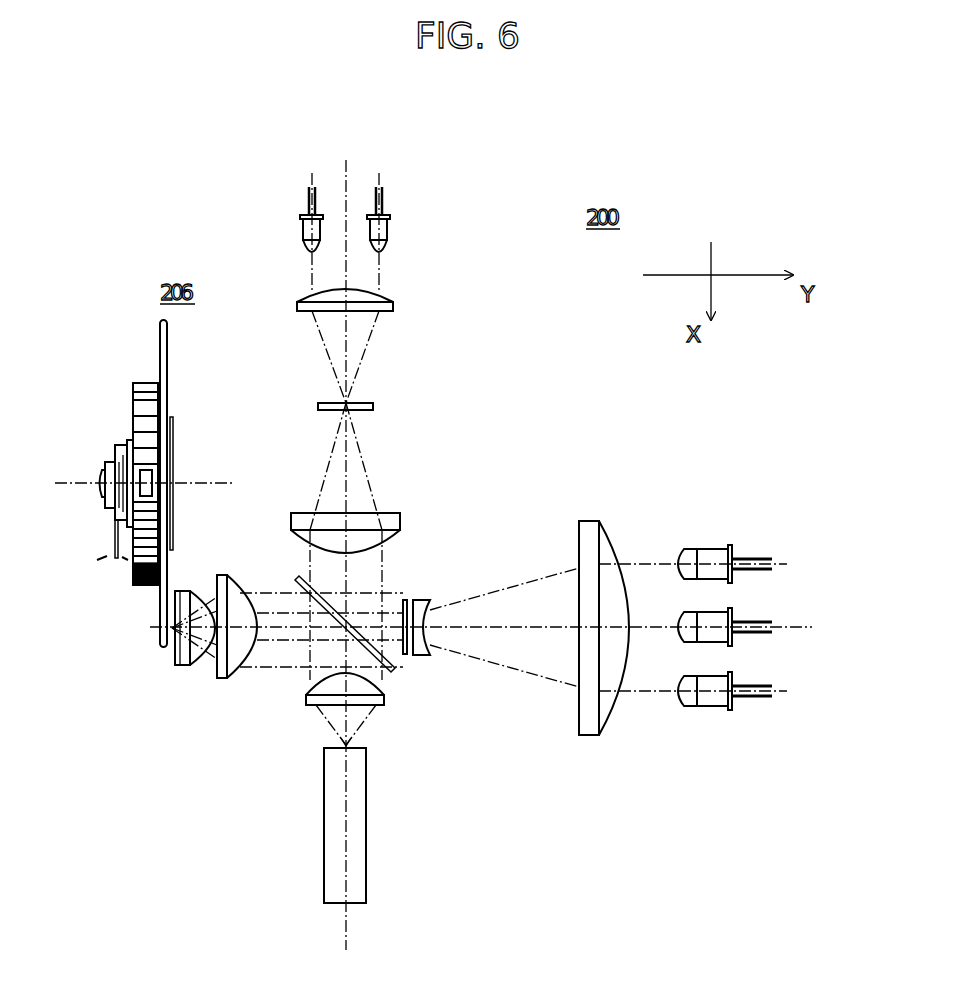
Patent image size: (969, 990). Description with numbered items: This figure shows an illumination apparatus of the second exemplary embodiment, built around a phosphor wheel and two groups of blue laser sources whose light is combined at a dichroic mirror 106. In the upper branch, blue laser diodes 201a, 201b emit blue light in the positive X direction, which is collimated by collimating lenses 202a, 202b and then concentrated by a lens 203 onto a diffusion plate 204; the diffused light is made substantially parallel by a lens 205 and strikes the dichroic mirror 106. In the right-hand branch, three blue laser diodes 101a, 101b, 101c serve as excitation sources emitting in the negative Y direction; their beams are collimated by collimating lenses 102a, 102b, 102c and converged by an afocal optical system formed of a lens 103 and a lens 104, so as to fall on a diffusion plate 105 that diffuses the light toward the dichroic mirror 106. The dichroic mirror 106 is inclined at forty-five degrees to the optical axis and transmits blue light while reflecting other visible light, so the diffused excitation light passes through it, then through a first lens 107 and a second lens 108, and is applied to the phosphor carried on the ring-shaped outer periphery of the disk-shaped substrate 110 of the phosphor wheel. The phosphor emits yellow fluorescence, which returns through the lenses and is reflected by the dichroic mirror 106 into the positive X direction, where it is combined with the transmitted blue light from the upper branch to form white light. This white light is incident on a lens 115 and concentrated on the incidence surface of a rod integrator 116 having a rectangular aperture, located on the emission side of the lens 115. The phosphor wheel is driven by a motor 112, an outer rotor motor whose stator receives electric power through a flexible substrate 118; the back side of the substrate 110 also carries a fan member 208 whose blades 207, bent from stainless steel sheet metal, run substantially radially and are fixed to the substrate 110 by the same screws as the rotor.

The blue laser diode 201a is at (302, 216).
The blue laser diode 201b is at (392, 216).
The collimating lens 202a is at (304, 250).
The collimating lens 202b is at (392, 246).
The lens 203 is at (393, 307).
The diffusion plate 204 is at (374, 406).
The lens 205 is at (400, 520).
The diffusion plate 105 is at (393, 674).
The dichroic mirror 106 is at (390, 707).
The lens 115 is at (307, 707).
The lens 104 is at (432, 657).
The rod integrator 116 is at (324, 850).
The lens 103 is at (596, 520).
The blue laser diode 101a is at (733, 546).
The blue laser diode 101b is at (733, 644).
The blue laser diode 101c is at (733, 709).
The collimating lens 102a is at (682, 548).
The collimating lens 102b is at (682, 641).
The collimating lens 102c is at (685, 708).
The second lens 108 is at (183, 667).
The first lens 107 is at (222, 680).
The substrate 110 is at (168, 370).
The blades 207 is at (138, 432).
The fan member 208 is at (147, 381).
The motor 112 is at (103, 475).
The flexible substrate 118 is at (112, 548).